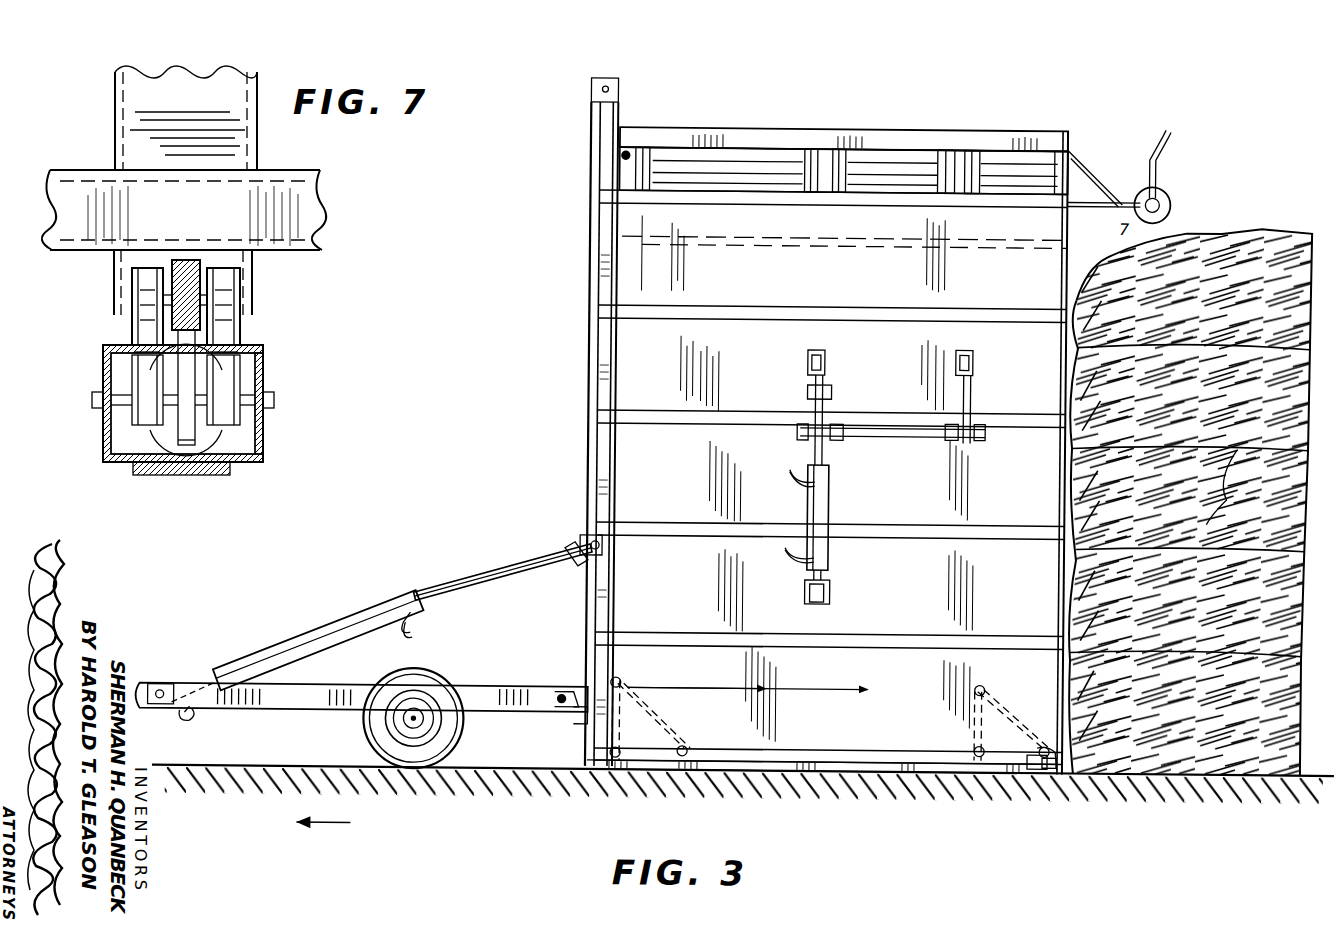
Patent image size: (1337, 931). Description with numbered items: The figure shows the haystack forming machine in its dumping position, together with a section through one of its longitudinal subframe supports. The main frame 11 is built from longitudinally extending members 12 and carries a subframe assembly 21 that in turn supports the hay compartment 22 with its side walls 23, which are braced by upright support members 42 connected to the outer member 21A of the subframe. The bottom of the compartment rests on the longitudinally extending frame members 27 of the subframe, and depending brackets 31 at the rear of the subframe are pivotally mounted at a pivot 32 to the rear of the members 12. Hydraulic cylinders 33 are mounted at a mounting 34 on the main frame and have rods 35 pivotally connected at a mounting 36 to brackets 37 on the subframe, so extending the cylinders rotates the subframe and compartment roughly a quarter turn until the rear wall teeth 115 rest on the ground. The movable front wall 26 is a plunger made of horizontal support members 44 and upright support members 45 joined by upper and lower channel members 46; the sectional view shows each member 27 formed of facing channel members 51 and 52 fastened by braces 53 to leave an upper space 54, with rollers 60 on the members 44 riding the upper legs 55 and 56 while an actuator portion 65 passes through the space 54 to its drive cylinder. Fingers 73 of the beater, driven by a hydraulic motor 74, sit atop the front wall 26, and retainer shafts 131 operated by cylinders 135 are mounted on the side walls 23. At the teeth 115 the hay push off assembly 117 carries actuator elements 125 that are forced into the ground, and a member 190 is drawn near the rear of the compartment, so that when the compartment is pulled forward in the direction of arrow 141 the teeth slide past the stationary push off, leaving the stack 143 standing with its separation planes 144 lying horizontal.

In FIG. 3, the main frame 11 is at (238, 713).
In FIG. 3, the longitudinally extending members 12 is at (328, 686).
In FIG. 3, the subframe assembly 21 is at (586, 417).
In FIG. 3, the outer member of subframe 21A is at (597, 243).
In FIG. 3, the hay compartment 22 is at (1080, 246).
In FIG. 3, the side walls 23 is at (628, 378).
In FIG. 3, the movable front wall assembly 26 is at (885, 152).
In FIG. 7, the longitudinally extending frame members 27 is at (272, 458).
In FIG. 3, the longitudinally extending frame members 27 is at (597, 307).
In FIG. 3, the depending brackets 31 is at (575, 714).
In FIG. 3, the pivot 32 is at (562, 707).
In FIG. 3, the hydraulic cylinders 33 is at (273, 645).
In FIG. 3, the cylinder mounting 34 is at (162, 686).
In FIG. 3, the extendable and retractable rods 35 is at (461, 584).
In FIG. 3, the rod pivot mounting 36 is at (582, 535).
In FIG. 3, the brackets 37 is at (580, 562).
In FIG. 3, the upright support members 42 is at (690, 527).
In FIG. 7, the horizontal support members 44 is at (240, 276).
In FIG. 3, the horizontal support members 44 is at (633, 150).
In FIG. 7, the upright support members 45 is at (130, 125).
In FIG. 3, the upright support members 45 is at (742, 132).
In FIG. 7, the upper and lower members 46 is at (318, 243).
In FIG. 7, the channel member 51 is at (263, 428).
In FIG. 7, the channel member 52 is at (103, 446).
In FIG. 7, the braces 53 is at (208, 475).
In FIG. 7, the space 54 is at (236, 333).
In FIG. 7, the upper leg 55 is at (248, 338).
In FIG. 7, the upper leg 56 is at (125, 343).
In FIG. 7, the first set of rollers 60 is at (226, 298).
In FIG. 7, the actuator portion 65 is at (183, 433).
In FIG. 3, the fingers 73 is at (1156, 165).
In FIG. 3, the hydraulic motor 74 is at (1169, 200).
In FIG. 3, the teeth 115 is at (909, 769).
In FIG. 3, the hay push off assembly 117 is at (655, 708).
In FIG. 3, the actuator elements 125 is at (1062, 768).
In FIG. 3, the shafts 131 is at (889, 441).
In FIG. 3, the hydraulic cylinders 135 is at (830, 504).
In FIG. 3, the arrow 141 is at (349, 828).
In FIG. 3, the stack 143 is at (1256, 226).
In FIG. 3, the separation planes 144 is at (1247, 546).
In FIG. 3, the rear latch 190 is at (1053, 748).